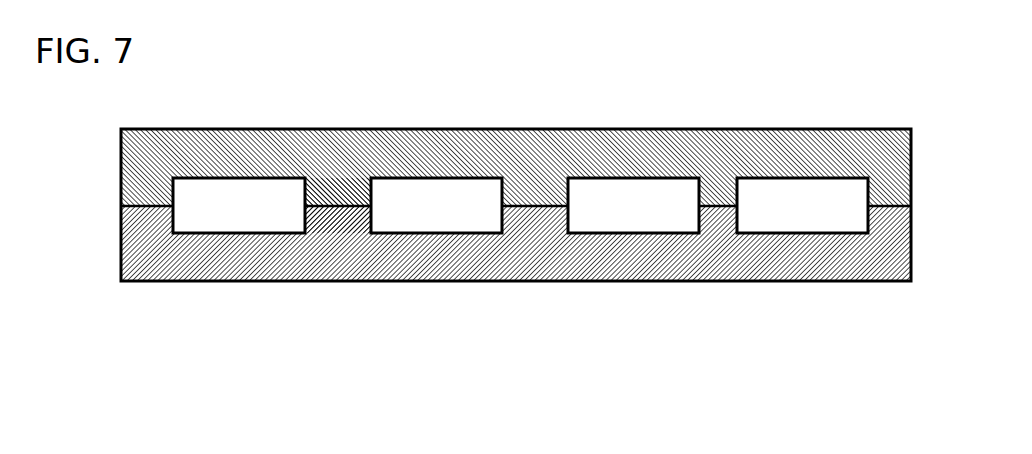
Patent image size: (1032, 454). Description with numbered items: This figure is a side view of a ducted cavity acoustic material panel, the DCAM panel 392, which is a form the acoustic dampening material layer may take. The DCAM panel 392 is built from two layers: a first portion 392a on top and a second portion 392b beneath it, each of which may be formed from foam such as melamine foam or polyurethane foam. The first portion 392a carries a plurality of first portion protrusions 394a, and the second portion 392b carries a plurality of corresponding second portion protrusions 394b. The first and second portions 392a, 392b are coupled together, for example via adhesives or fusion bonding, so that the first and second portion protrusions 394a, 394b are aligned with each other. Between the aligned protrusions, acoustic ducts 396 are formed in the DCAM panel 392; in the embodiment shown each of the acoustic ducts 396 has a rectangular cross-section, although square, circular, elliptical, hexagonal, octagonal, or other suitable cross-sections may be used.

The DCAM panel 392 is at (723, 110).
The first portion 392a is at (548, 150).
The second portion 392b is at (517, 258).
The first portion protrusions 394a is at (340, 188).
The second portion protrusions 394b is at (328, 220).
The acoustic ducts 396 is at (417, 203).